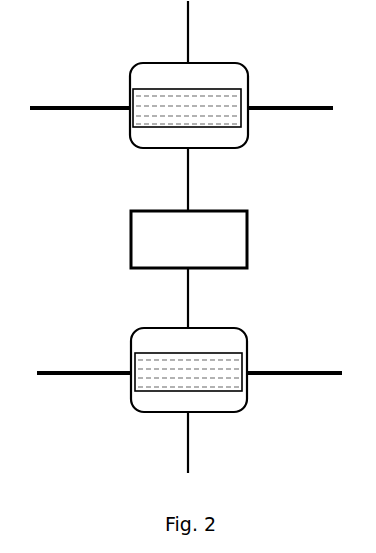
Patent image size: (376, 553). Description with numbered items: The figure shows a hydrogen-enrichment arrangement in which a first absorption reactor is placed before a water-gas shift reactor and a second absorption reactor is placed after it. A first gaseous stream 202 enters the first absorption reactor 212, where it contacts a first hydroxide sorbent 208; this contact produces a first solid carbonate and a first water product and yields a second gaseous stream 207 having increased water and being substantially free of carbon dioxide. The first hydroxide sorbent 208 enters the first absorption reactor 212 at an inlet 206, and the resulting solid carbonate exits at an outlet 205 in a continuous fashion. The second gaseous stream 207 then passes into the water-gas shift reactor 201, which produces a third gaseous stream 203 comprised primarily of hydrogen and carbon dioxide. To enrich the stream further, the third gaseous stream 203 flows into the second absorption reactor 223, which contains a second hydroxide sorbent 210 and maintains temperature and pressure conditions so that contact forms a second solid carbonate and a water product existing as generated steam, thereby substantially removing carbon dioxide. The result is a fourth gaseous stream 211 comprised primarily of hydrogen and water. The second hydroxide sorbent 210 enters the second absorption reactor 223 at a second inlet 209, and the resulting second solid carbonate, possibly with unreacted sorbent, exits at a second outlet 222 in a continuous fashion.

The water-gas shift reactor 201 is at (189, 239).
The first gaseous stream 202 is at (185, 458).
The third gaseous stream 203 is at (186, 182).
The outlet 205 is at (307, 371).
The inlet 206 is at (83, 370).
The second gaseous stream 207 is at (186, 312).
The first hydroxide sorbent 208 is at (227, 377).
The second inlet 209 is at (75, 105).
The second hydroxide sorbent 210 is at (227, 118).
The fourth gaseous stream 211 is at (183, 28).
The first absorption reactor 212 is at (248, 337).
The second outlet 222 is at (300, 105).
The second absorption reactor 223 is at (239, 65).